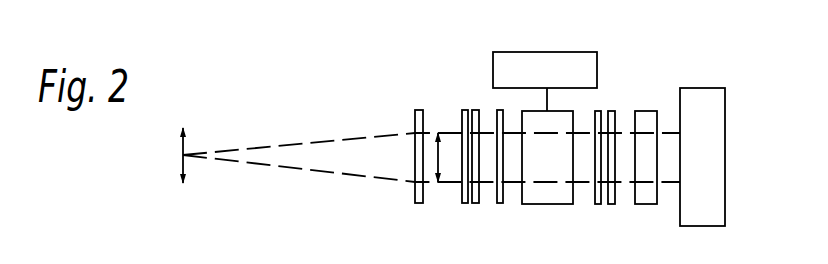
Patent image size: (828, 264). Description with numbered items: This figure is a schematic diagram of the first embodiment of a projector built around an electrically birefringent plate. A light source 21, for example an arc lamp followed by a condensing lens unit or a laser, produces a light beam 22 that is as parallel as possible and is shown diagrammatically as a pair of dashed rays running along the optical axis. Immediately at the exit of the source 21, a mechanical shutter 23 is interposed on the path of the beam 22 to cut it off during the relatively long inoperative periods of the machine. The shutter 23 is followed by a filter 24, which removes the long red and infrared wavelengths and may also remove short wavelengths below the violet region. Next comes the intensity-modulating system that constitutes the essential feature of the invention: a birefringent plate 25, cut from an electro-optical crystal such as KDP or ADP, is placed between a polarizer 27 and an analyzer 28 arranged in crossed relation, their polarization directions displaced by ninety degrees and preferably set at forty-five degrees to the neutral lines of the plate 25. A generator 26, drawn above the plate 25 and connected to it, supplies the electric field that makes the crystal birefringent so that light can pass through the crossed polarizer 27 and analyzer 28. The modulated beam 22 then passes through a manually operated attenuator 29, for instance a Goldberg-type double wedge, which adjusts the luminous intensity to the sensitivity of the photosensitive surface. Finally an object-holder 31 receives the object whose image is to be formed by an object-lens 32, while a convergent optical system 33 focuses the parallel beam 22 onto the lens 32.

The light source 21 is at (703, 52).
The light beam 22 is at (667, 232).
The mechanical shutter 23 is at (643, 233).
The filter 24 is at (610, 233).
The birefringent plate 25 is at (550, 230).
The generator 26 is at (585, 35).
The polarizer 27 is at (617, 78).
The analyzer 28 is at (505, 227).
The manually operated attenuator 29 is at (467, 238).
The object-holder 31 is at (422, 228).
The object-lens 32 is at (181, 162).
The convergent optical system 33 is at (457, 87).